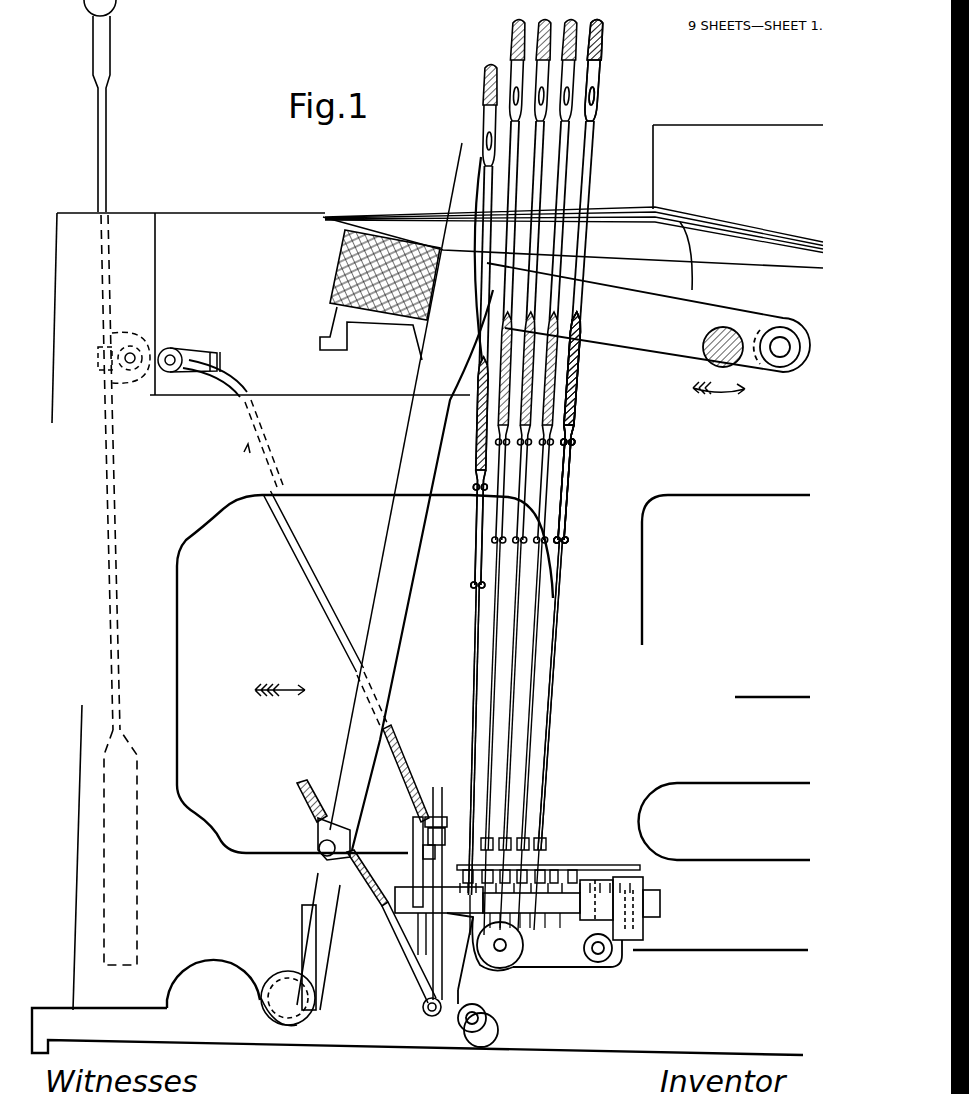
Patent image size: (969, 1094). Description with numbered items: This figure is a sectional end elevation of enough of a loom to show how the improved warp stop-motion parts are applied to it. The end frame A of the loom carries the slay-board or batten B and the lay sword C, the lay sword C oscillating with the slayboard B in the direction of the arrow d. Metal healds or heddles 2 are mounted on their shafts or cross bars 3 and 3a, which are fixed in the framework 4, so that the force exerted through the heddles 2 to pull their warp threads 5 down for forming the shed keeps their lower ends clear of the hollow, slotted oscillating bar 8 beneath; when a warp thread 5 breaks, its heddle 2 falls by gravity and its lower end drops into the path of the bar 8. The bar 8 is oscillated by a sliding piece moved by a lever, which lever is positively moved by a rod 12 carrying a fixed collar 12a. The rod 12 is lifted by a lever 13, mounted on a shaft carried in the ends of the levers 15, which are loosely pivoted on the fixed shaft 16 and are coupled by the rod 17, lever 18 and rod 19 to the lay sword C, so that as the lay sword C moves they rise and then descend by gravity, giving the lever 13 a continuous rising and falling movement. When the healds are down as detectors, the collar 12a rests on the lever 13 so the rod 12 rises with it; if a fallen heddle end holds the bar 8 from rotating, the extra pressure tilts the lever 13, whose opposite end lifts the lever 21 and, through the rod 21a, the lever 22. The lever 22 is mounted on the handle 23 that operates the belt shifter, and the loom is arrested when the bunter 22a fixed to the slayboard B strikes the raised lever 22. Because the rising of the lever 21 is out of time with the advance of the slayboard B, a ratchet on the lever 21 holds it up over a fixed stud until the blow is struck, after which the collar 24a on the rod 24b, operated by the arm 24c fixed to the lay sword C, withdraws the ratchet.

The heddle 2 is at (478, 330).
The heddle shaft 3 is at (597, 95).
The heddle shaft 3a is at (582, 330).
The framework 4 is at (600, 43).
The warp thread 5 is at (384, 215).
The oscillating bar 8 is at (583, 367).
The rod 12 is at (568, 487).
The collar 12a is at (545, 835).
The lever 13 is at (567, 877).
The lever 15 is at (439, 929).
The fixed shaft 16 is at (570, 903).
The rod 17 is at (620, 923).
The lever 18 is at (492, 988).
The rod 19 is at (413, 945).
The lever 21 is at (420, 848).
The rod 21a is at (330, 607).
The lever 22 is at (220, 360).
The bunter 22a is at (371, 336).
The handle 23 is at (103, 178).
The collar 24a is at (432, 855).
The rod 24b is at (437, 800).
The arm 24c is at (353, 1003).
The end frame A is at (648, 365).
The slay-board B is at (347, 263).
The lay sword C is at (411, 496).
The arrow d is at (280, 677).